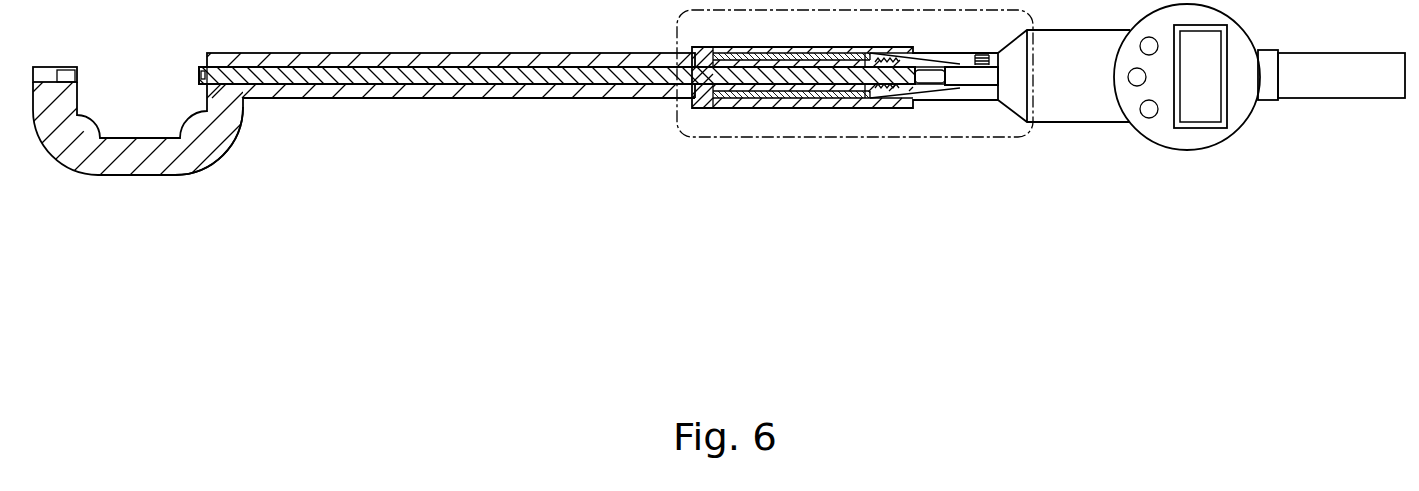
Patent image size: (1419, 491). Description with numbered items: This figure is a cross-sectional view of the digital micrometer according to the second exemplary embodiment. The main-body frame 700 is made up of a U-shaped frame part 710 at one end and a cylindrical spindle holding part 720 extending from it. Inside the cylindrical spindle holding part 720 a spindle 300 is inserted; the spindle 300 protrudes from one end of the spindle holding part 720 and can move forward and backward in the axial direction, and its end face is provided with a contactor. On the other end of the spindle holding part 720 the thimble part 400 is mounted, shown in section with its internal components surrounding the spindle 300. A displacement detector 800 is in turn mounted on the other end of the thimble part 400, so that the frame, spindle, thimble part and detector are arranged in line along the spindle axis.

The spindle 300 is at (466, 86).
The thimble part 400 is at (810, 145).
The main-body frame 700 is at (140, 173).
The U-shaped frame part 710 is at (222, 153).
The spindle holding part 720 is at (384, 91).
The displacement detector 800 is at (1082, 113).